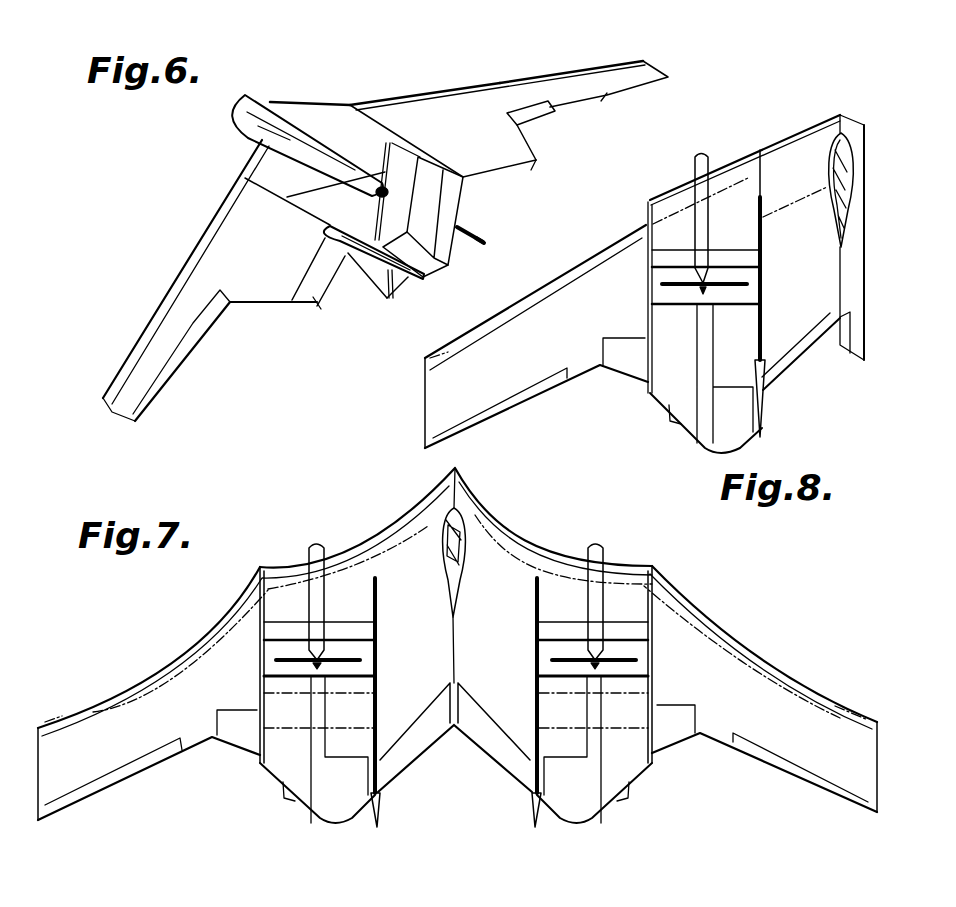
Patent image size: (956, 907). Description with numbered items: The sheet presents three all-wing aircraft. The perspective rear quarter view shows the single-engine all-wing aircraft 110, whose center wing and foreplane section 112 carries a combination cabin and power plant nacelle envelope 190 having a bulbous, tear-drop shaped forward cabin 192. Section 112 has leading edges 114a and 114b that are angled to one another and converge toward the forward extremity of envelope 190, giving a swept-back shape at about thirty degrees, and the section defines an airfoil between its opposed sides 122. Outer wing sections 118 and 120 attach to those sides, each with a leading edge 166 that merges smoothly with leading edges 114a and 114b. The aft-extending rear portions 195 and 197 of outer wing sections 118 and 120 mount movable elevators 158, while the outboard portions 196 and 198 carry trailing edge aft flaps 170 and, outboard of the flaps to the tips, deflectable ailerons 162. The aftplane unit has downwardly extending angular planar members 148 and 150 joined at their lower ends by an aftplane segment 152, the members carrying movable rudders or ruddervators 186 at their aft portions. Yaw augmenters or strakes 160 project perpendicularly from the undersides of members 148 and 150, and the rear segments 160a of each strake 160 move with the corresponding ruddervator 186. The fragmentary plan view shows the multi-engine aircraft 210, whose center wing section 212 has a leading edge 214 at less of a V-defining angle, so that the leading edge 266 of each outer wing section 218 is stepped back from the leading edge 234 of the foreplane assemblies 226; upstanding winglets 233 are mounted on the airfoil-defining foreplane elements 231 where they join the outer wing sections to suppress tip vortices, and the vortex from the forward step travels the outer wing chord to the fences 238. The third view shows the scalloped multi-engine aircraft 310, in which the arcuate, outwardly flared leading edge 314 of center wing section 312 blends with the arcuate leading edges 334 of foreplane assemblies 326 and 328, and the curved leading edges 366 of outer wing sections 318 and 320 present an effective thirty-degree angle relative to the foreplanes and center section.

In FIG. 6, the single-engine all-wing aircraft 110 is at (178, 182).
In FIG. 6, the center wing and foreplane section 112 is at (356, 101).
In FIG. 6, the leading edge 114a is at (247, 155).
In FIG. 6, the leading edge 114b is at (320, 102).
In FIG. 6, the outer wing section 118 is at (190, 253).
In FIG. 6, the outer wing section 120 is at (498, 76).
In FIG. 6, the opposed sides 122 is at (393, 108).
In FIG. 6, the angular planar member 148 is at (435, 170).
In FIG. 6, the angular planar member 150 is at (326, 229).
In FIG. 6, the aftplane segment 152 is at (432, 266).
In FIG. 6, the elevator 158 is at (533, 168).
In FIG. 6, the yaw augmenter 160 is at (462, 225).
In FIG. 6, the rear segment of strake 160a is at (486, 243).
In FIG. 6, the aileron 162 is at (603, 98).
In FIG. 6, the leading edge 166 is at (175, 287).
In FIG. 6, the trailing edge aft flap 170 is at (547, 118).
In FIG. 6, the ruddervator 186 is at (464, 194).
In FIG. 6, the cabin and power plant nacelle envelope 190 is at (289, 78).
In FIG. 6, the forward cabin 192 is at (250, 124).
In FIG. 6, the aft-extending rear portion 195 is at (260, 298).
In FIG. 6, the outboard portion 196 is at (142, 352).
In FIG. 6, the aft-extending rear portion 197 is at (530, 152).
In FIG. 6, the outboard portion 198 is at (618, 60).
In FIG. 8, the multi-engine aircraft 210 is at (792, 110).
In FIG. 8, the center wing section 212 is at (819, 118).
In FIG. 8, the leading edge 214 is at (760, 160).
In FIG. 8, the outer wing section 218 is at (424, 392).
In FIG. 8, the foreplane assembly 226 is at (723, 158).
In FIG. 8, the foreplane element 231 is at (745, 232).
In FIG. 8, the winglet 233 is at (645, 223).
In FIG. 8, the leading edge 234 is at (663, 197).
In FIG. 8, the fence 238 is at (648, 327).
In FIG. 8, the leading edge 266 is at (501, 309).
In FIG. 7, the multi-engine all-wing aircraft 310 is at (542, 502).
In FIG. 7, the center wing section 312 is at (440, 481).
In FIG. 7, the leading edge 314 is at (383, 540).
In FIG. 7, the outer wing section 318 is at (88, 698).
In FIG. 7, the outer wing section 320 is at (822, 697).
In FIG. 7, the foreplane assembly 326 is at (345, 548).
In FIG. 7, the foreplane assembly 328 is at (627, 564).
In FIG. 7, the leading edge 334 is at (283, 567).
In FIG. 7, the leading edge 366 is at (207, 627).